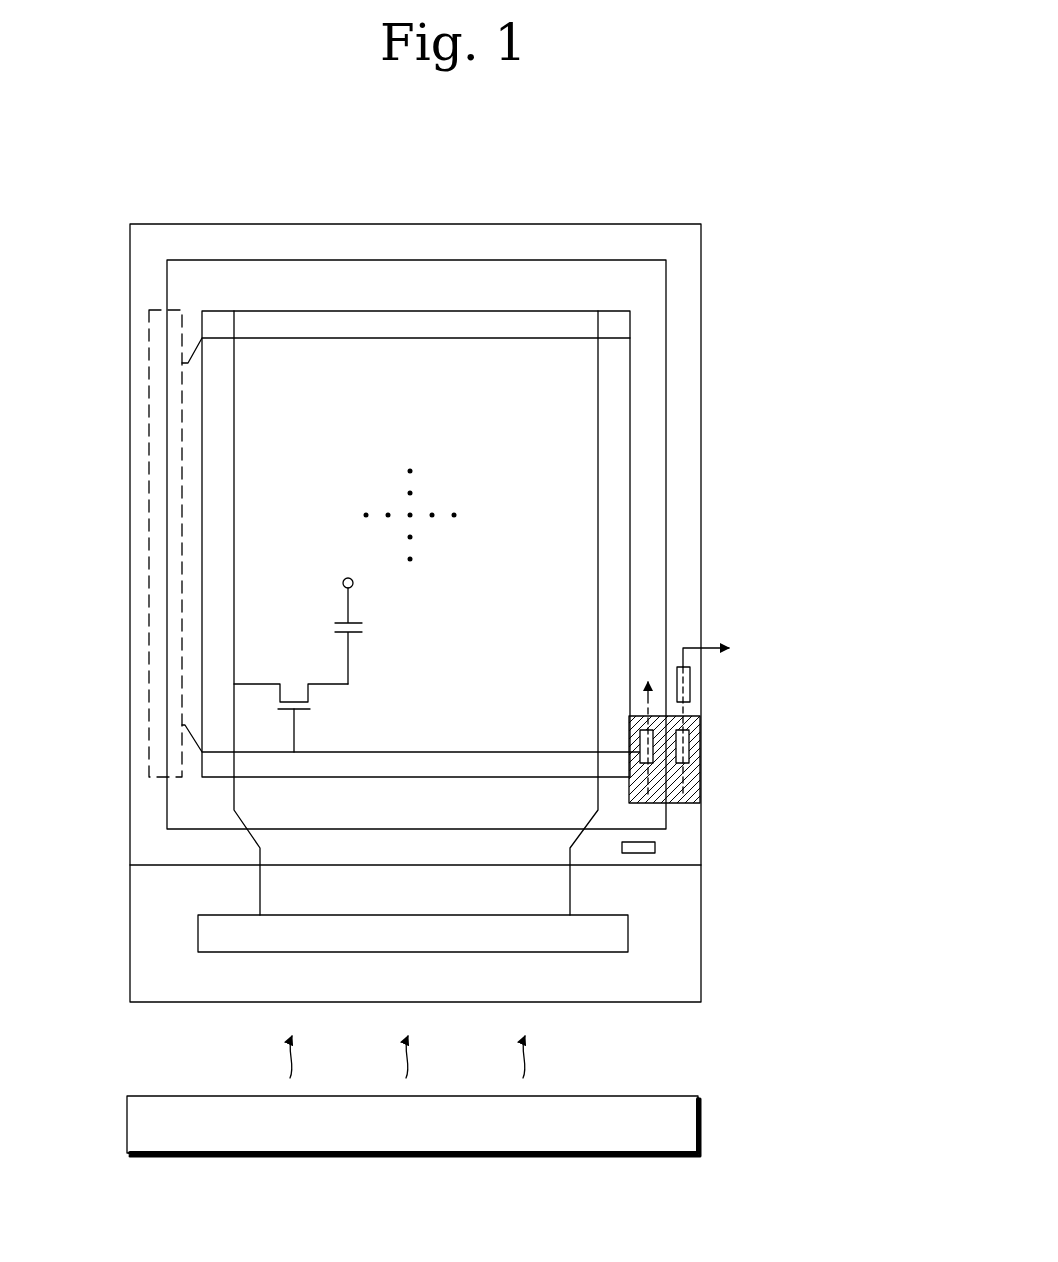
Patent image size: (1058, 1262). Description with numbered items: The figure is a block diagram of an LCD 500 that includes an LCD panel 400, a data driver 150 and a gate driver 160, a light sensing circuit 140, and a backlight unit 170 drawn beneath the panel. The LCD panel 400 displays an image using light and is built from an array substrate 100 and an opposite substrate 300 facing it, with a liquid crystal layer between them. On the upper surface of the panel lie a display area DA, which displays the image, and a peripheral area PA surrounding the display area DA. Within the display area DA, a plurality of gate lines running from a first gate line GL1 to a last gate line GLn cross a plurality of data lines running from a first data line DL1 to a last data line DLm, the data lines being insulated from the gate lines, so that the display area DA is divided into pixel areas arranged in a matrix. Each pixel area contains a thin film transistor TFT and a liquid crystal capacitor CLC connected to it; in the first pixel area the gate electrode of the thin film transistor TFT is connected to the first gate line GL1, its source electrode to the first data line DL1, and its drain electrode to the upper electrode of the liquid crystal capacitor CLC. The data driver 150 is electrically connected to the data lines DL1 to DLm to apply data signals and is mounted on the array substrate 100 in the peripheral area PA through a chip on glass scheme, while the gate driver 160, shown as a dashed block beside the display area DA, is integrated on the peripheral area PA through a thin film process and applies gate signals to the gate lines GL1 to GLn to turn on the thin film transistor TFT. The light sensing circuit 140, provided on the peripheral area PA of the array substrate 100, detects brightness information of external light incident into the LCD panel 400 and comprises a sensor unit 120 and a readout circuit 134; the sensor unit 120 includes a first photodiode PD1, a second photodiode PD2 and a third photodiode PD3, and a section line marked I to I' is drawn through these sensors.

The LCD 500 is at (766, 172).
The LCD panel 400 is at (795, 853).
The array substrate 100 is at (701, 932).
The opposite substrate 300 is at (682, 867).
The gate driver 160 is at (150, 522).
The light sensing circuit 140 is at (857, 720).
The sensor unit 120 is at (795, 673).
The readout circuit 134 is at (655, 848).
The data driver 150 is at (590, 955).
The backlight unit 170 is at (702, 1123).
The display area DA is at (610, 413).
The peripheral area PA is at (683, 501).
The gate line GLn is at (418, 340).
The first gate line GL1 is at (414, 750).
The first data line DL1 is at (236, 517).
The data line DLm is at (598, 516).
The thin film transistor TFT is at (290, 676).
The liquid crystal capacitor CLC is at (372, 627).
The first photodiode PD1 is at (690, 683).
The second photodiode PD2 is at (690, 737).
The third photodiode PD3 is at (653, 749).
The section line I is at (647, 724).
The section line I' is at (717, 717).